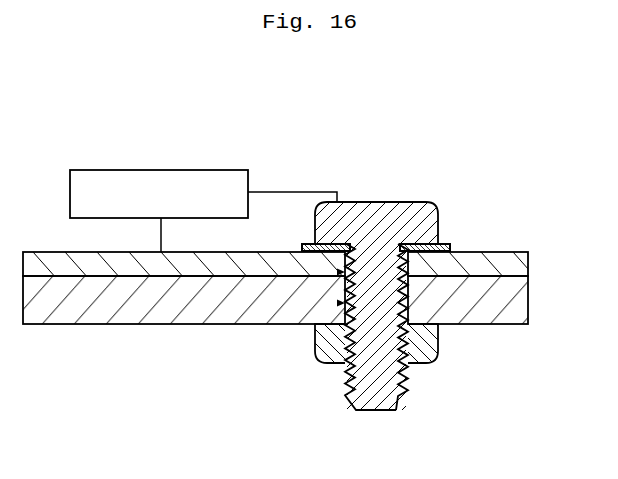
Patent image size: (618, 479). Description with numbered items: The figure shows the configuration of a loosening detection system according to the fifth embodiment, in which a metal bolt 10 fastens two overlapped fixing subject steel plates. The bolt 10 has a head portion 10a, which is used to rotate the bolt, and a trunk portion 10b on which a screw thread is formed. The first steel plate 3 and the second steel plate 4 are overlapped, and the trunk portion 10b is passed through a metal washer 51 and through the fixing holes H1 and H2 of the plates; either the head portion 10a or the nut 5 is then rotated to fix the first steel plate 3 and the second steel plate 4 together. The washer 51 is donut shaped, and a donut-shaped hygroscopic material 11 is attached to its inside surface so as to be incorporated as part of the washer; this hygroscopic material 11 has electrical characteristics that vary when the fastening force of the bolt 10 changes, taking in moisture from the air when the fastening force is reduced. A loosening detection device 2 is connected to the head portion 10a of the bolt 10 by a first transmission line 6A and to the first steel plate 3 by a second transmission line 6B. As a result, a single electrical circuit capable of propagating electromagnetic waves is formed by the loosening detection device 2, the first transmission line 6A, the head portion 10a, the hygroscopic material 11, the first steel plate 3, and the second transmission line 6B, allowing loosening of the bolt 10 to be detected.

The loosening detection device 2 is at (163, 170).
The first transmission line 6A is at (283, 192).
The second transmission line 6B is at (162, 236).
The first steel plate 3 is at (530, 260).
The second steel plate 4 is at (530, 298).
The bolt 10 is at (378, 286).
The head portion 10a is at (413, 209).
The trunk portion 10b is at (404, 385).
The hygroscopic material 11 is at (325, 243).
The washer 51 is at (301, 245).
The nut 5 is at (438, 350).
The fixing hole H1 is at (345, 272).
The fixing hole H2 is at (345, 303).